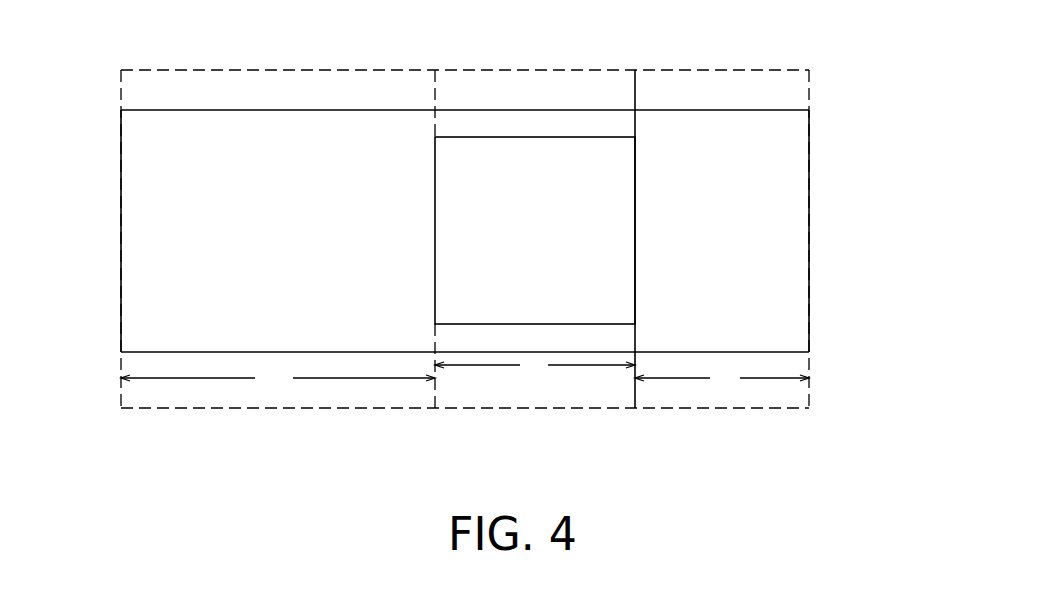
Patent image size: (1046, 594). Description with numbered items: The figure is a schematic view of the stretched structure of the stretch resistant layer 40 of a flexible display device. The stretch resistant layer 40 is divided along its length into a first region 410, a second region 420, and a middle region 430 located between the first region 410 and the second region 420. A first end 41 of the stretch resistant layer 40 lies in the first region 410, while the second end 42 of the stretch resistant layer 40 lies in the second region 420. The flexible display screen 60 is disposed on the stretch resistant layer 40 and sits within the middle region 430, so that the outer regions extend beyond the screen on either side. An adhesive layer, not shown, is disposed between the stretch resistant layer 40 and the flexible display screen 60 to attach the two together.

The stretch resistant layer 40 is at (907, 312).
The first end 41 is at (121, 238).
The second end 42 is at (809, 239).
The flexible display screen 60 is at (529, 158).
The first region 410 is at (337, 395).
The second region 420 is at (769, 397).
The middle region 430 is at (571, 397).